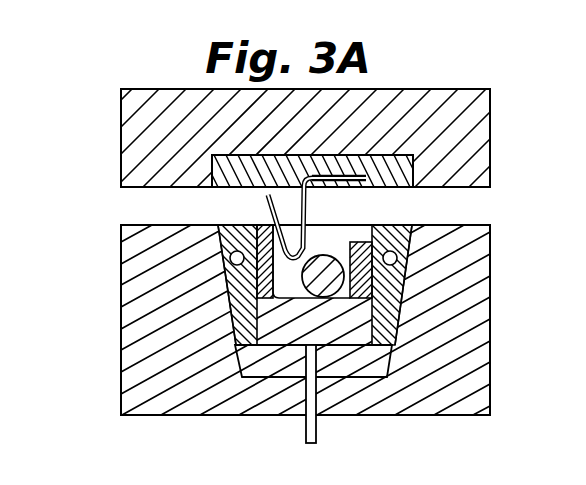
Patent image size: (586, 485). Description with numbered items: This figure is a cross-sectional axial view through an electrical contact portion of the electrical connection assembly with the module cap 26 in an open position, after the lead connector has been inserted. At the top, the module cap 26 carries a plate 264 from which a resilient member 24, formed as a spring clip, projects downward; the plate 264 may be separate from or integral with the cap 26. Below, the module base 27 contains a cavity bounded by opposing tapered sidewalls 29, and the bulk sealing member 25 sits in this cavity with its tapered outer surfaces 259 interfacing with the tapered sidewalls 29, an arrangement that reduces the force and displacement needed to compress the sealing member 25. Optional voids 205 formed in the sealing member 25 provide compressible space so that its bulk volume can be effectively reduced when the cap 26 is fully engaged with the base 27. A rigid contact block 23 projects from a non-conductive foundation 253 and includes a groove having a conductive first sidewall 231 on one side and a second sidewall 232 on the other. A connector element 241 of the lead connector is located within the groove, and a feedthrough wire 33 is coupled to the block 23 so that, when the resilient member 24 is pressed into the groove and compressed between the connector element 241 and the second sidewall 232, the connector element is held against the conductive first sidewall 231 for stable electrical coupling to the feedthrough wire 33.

The module cap 26 is at (145, 127).
The plate 264 is at (210, 163).
The resilient member 24 is at (265, 204).
The connector element 241 is at (345, 226).
The bulk sealing member 25 is at (240, 226).
The voids 205 is at (220, 275).
The tapered outer surfaces 259 is at (230, 257).
The second sidewall 232 is at (290, 268).
The first sidewall 231 is at (368, 300).
The tapered sidewalls 29 is at (245, 340).
The module base 27 is at (152, 400).
The contact block 23 is at (268, 330).
The feedthrough wire 33 is at (316, 427).
The foundation 253 is at (330, 292).